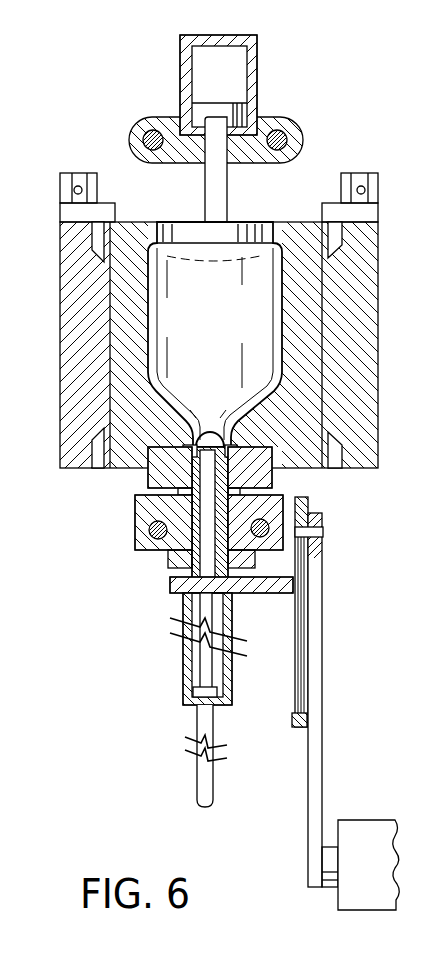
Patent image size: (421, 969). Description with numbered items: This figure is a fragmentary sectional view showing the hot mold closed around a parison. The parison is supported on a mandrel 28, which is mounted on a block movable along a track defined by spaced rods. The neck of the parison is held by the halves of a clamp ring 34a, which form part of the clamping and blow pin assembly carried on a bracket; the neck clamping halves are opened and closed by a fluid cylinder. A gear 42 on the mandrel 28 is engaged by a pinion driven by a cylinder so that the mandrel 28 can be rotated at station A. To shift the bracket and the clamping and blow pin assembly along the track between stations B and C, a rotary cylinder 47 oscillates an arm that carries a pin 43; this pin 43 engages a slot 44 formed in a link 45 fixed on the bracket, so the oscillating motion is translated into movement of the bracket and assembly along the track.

The clamp ring 34a is at (148, 482).
The mandrel 28 is at (150, 487).
The gear 42 is at (168, 570).
The pin 43 is at (323, 532).
The slot 44 is at (297, 677).
The link 45 is at (292, 727).
The rotary cylinder 47 is at (366, 835).